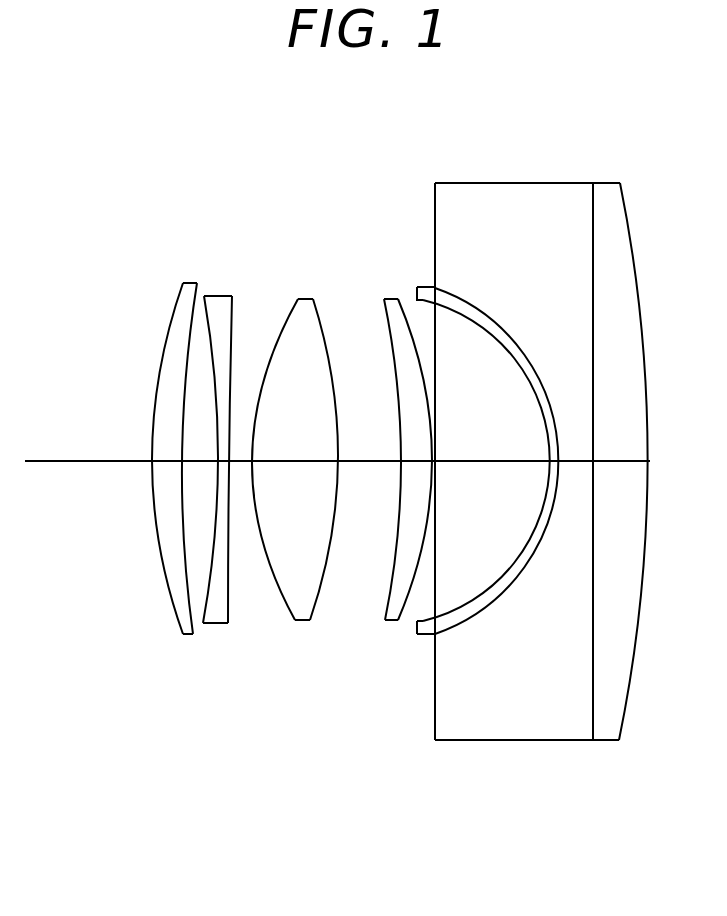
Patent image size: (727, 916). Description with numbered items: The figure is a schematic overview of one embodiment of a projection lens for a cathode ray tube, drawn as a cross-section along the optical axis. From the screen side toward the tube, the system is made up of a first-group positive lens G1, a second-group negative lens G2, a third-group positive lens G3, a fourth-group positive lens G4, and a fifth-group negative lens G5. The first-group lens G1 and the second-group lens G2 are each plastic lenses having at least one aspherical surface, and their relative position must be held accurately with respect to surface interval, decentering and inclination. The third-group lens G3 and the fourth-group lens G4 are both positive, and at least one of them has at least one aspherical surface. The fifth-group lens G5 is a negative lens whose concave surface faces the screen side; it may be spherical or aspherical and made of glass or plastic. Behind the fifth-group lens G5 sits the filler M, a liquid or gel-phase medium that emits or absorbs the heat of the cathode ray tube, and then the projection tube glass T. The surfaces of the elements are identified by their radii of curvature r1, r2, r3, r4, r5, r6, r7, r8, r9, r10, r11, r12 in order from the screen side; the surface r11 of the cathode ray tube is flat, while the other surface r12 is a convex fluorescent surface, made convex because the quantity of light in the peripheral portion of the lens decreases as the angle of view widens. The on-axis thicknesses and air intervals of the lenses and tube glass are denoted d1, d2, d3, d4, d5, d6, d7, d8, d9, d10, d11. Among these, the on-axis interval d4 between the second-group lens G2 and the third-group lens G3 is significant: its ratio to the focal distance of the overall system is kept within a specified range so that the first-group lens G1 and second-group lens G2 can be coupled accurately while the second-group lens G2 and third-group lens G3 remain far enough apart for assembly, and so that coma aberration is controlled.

The first-group positive lens G1 is at (139, 433).
The second-group negative lens G2 is at (199, 458).
The third-group positive lens G3 is at (299, 453).
The fourth-group positive lens G4 is at (404, 429).
The fifth-group negative lens G5 is at (469, 443).
The filler M is at (514, 457).
The projection tube glass T is at (616, 480).
The radius of curvature r1 is at (158, 531).
The radius of curvature r2 is at (185, 266).
The radius of curvature r3 is at (207, 565).
The radius of curvature r4 is at (216, 490).
The radius of curvature r5 is at (287, 602).
The radius of curvature r6 is at (320, 607).
The radius of curvature r7 is at (390, 558).
The radius of curvature r8 is at (422, 558).
The radius of curvature r9 is at (420, 620).
The radius of curvature r10 is at (463, 632).
The flat surface of the cathode ray tube r11 is at (545, 484).
The convex fluorescent surface r12 is at (645, 202).
The on-axis thickness d1 is at (168, 461).
The on-axis air interval d2 is at (198, 461).
The on-axis thickness d3 is at (234, 461).
The on-axis interval d4 is at (240, 461).
The on-axis thickness d5 is at (295, 461).
The on-axis air interval d6 is at (363, 461).
The on-axis thickness d7 is at (417, 461).
The on-axis air interval d8 is at (478, 462).
The on-axis thickness d9 is at (551, 461).
The on-axis air interval d10 is at (576, 463).
The on-axis thickness d11 is at (620, 461).